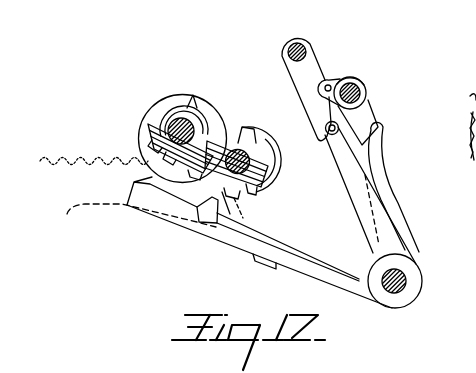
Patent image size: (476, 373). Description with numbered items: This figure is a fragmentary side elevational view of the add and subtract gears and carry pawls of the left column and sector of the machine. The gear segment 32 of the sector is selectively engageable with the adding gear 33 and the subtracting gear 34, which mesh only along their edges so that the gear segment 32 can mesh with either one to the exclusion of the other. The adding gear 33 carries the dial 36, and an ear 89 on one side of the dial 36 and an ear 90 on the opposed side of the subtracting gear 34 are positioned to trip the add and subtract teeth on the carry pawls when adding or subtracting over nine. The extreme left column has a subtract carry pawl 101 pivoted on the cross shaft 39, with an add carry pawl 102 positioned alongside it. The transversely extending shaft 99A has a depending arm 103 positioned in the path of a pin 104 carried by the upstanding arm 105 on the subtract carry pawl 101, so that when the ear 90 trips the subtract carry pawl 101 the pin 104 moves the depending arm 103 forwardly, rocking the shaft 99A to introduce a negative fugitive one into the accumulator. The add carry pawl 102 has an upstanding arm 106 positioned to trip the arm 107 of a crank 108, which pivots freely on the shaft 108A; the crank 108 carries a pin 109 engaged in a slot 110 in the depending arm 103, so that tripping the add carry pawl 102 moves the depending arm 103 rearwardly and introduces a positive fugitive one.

The gear segment 32 is at (457, 142).
The adding gear 33 is at (154, 134).
The subtracting gear 34 is at (260, 192).
The dial 36 is at (152, 112).
The cross shaft 39 is at (407, 279).
The ear 89 is at (187, 99).
The ear 90 is at (257, 135).
The transversely extending shaft 99A is at (309, 51).
The subtract carry pawl 101 is at (289, 263).
The add carry pawl 102 is at (177, 218).
The depending arm 103 is at (303, 99).
The pin 104 is at (332, 135).
The upstanding arm 105 is at (354, 188).
The upstanding arm 106 is at (380, 169).
The arm 107 is at (374, 108).
The crank 108 is at (366, 86).
The shaft 108A is at (362, 83).
The pin 109 is at (336, 80).
The slot 110 is at (319, 85).